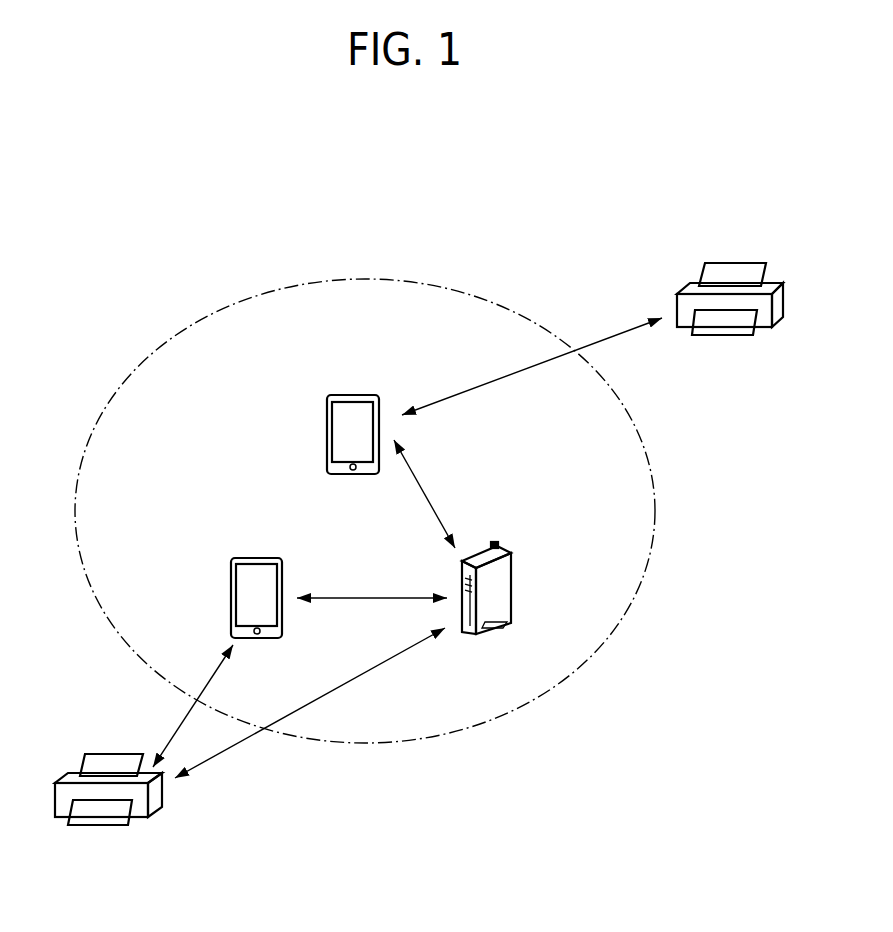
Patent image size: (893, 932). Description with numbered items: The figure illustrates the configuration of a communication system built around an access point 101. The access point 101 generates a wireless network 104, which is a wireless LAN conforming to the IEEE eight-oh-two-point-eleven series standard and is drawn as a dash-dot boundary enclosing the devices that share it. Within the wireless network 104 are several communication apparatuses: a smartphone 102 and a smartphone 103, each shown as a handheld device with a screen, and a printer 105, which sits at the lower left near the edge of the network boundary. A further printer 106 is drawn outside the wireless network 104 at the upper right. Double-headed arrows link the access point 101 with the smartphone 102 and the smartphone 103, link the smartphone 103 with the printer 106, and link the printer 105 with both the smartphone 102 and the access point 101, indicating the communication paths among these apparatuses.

The access point 101 is at (513, 588).
The smartphone 102 is at (245, 557).
The smartphone 103 is at (343, 394).
The wireless network 104 is at (607, 643).
The printer 105 is at (75, 773).
The printer 106 is at (697, 283).